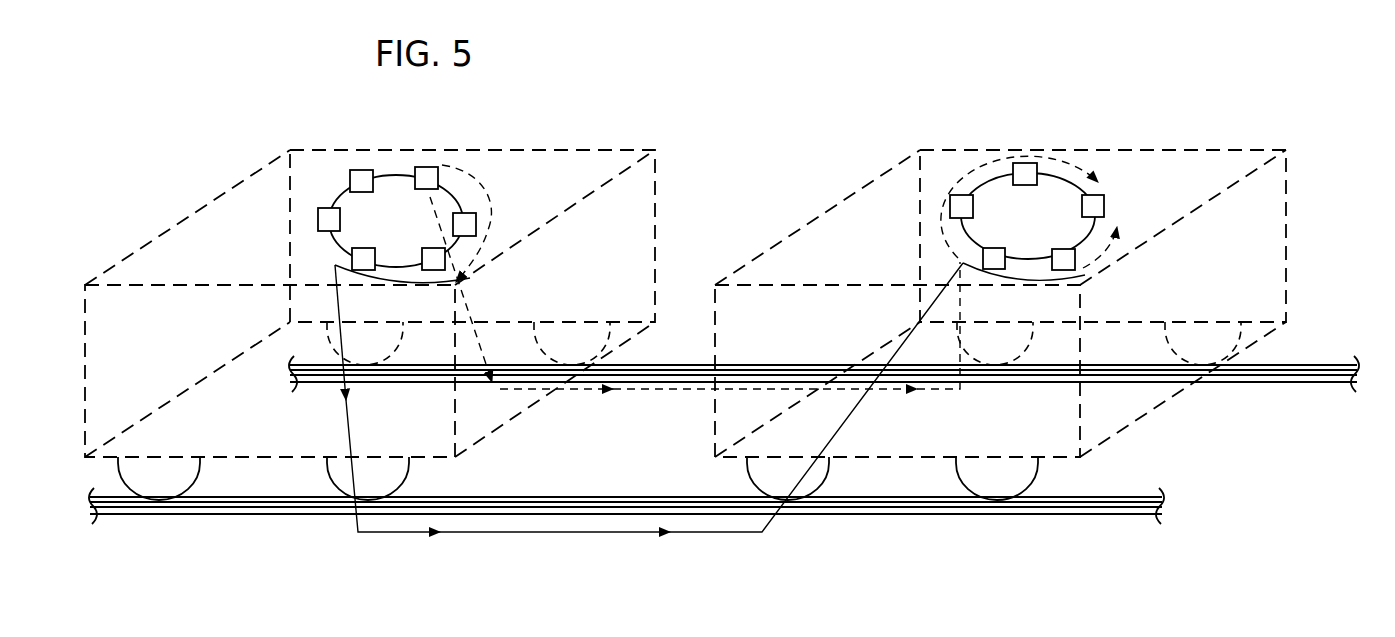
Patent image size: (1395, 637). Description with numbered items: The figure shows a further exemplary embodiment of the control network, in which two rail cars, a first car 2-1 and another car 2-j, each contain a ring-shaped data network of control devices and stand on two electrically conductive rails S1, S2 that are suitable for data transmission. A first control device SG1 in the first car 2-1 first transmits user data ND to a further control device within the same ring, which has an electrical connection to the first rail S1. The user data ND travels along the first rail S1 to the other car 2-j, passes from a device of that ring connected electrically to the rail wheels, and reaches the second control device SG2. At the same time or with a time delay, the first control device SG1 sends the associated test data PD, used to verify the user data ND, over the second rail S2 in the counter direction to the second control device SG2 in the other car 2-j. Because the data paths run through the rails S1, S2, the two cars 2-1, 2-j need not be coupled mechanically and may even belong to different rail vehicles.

The first car 2-1 is at (628, 251).
The other car 2-j is at (1250, 251).
The first control device SG1 is at (473, 223).
The second control device SG2 is at (1103, 206).
The test data PD is at (773, 271).
The user data ND is at (649, 414).
The first rail S1 is at (1134, 509).
The second rail S2 is at (1336, 374).